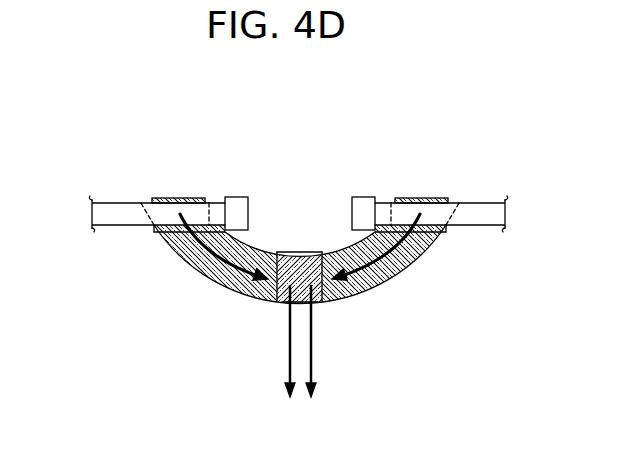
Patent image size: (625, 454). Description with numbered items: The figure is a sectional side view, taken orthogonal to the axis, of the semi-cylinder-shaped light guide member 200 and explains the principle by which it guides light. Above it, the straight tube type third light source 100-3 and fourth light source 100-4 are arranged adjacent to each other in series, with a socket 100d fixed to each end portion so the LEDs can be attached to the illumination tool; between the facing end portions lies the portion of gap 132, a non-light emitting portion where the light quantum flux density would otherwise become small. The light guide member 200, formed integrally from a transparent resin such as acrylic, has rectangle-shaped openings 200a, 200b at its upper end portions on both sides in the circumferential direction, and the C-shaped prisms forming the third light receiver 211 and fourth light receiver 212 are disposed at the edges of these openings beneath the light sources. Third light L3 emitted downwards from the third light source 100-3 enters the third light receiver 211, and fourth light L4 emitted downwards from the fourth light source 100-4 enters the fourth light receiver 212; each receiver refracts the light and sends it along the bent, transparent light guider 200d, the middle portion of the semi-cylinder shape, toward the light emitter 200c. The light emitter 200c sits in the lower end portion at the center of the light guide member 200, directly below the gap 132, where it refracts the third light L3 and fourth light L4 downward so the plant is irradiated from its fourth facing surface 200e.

The third light source 100-3 is at (108, 205).
The fourth light source 100-4 is at (490, 205).
The socket 100d is at (237, 213).
The gap 132 is at (298, 240).
The light guide member 200 is at (293, 267).
The opening 200a is at (192, 200).
The opening 200b is at (405, 200).
The light emitter 200c is at (272, 301).
The light guider 200d is at (238, 298).
The fourth facing surface 200e is at (298, 307).
The third light receiver 211 is at (158, 235).
The fourth light receiver 212 is at (445, 236).
The third light L3 is at (213, 268).
The fourth light L4 is at (398, 268).